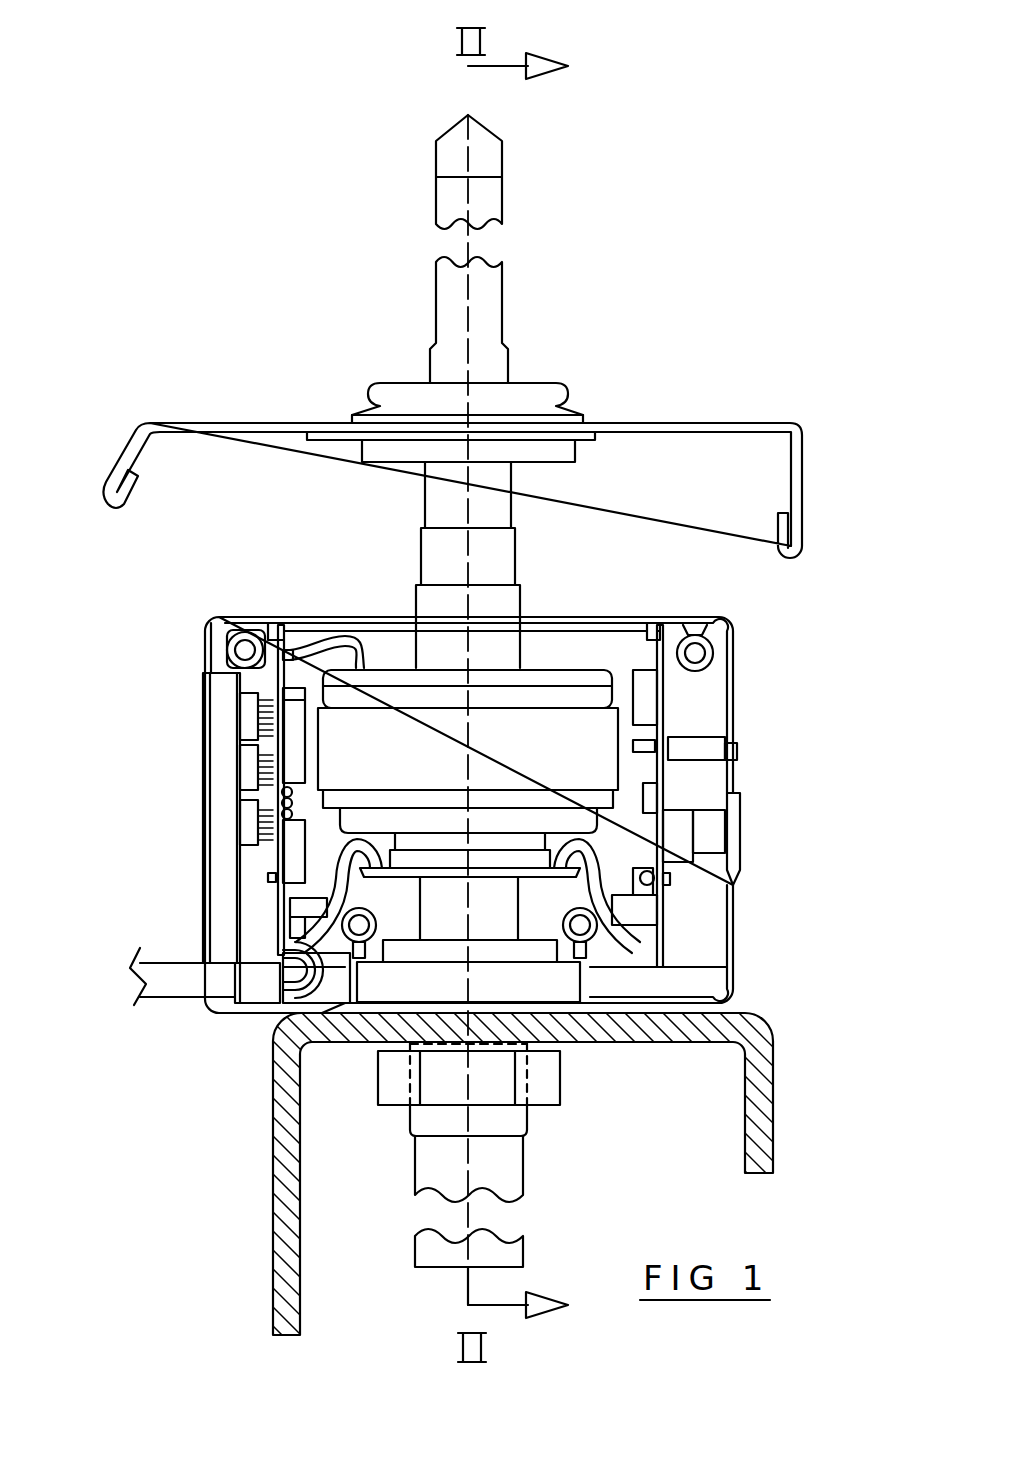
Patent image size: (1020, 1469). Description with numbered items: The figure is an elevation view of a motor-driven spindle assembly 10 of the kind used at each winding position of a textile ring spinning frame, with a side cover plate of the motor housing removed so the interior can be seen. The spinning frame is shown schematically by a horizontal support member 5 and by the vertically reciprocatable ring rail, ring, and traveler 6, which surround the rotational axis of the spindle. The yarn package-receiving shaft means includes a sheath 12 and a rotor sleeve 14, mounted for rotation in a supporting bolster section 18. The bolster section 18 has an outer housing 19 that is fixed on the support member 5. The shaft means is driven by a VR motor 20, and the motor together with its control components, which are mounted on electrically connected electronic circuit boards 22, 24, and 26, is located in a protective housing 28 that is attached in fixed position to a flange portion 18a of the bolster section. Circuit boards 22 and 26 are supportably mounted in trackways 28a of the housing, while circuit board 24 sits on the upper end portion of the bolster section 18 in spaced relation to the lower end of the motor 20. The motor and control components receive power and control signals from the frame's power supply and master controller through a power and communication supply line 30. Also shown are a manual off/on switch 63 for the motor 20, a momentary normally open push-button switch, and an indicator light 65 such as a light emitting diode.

The support member 5 is at (752, 1030).
The ring rail, ring, and traveler 6 is at (590, 420).
The spindle assembly 10 is at (567, 553).
The sheath 12 is at (512, 192).
The rotor sleeve 14 is at (432, 513).
The bolster section 18 is at (525, 1162).
The flange portion 18a is at (393, 983).
The outer housing 19 is at (408, 1118).
The VR motor 20 is at (460, 757).
The circuit board 22 is at (280, 851).
The circuit board 24 is at (380, 873).
The circuit board 26 is at (660, 920).
The protective housing 28 is at (733, 683).
The trackways 28a is at (272, 618).
The power and communication supply line 30 is at (198, 988).
The manual off/on switch 63 is at (745, 833).
The indicator light 65 is at (737, 748).